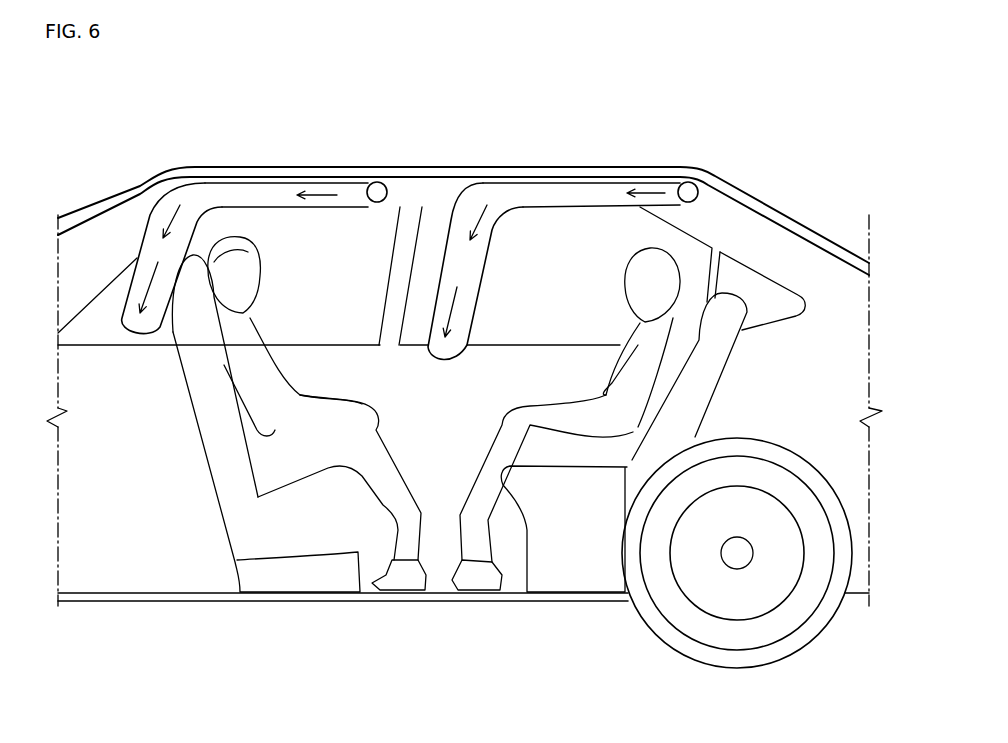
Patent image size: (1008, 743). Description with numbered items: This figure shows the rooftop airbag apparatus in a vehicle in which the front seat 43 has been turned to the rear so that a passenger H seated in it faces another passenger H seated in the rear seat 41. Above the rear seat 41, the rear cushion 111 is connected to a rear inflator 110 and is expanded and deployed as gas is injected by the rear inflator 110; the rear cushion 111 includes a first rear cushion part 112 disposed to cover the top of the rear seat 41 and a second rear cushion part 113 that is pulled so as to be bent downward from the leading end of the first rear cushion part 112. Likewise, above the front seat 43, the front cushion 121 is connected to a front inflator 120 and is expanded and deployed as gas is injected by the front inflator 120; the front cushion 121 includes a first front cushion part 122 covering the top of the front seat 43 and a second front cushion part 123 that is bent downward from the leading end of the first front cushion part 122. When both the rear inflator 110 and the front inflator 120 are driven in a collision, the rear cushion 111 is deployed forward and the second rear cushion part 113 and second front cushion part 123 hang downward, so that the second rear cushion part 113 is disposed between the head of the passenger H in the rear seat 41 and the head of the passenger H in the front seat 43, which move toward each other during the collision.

The rear inflator 110 is at (695, 186).
The rear cushion 111 is at (568, 172).
The first rear cushion part 112 is at (602, 195).
The second rear cushion part 113 is at (450, 273).
The front inflator 120 is at (385, 181).
The front cushion 121 is at (216, 172).
The first front cushion part 122 is at (280, 190).
The second front cushion part 123 is at (147, 252).
The rear seat 41 is at (578, 548).
The front seat 43 is at (300, 538).
The passenger H is at (560, 450).